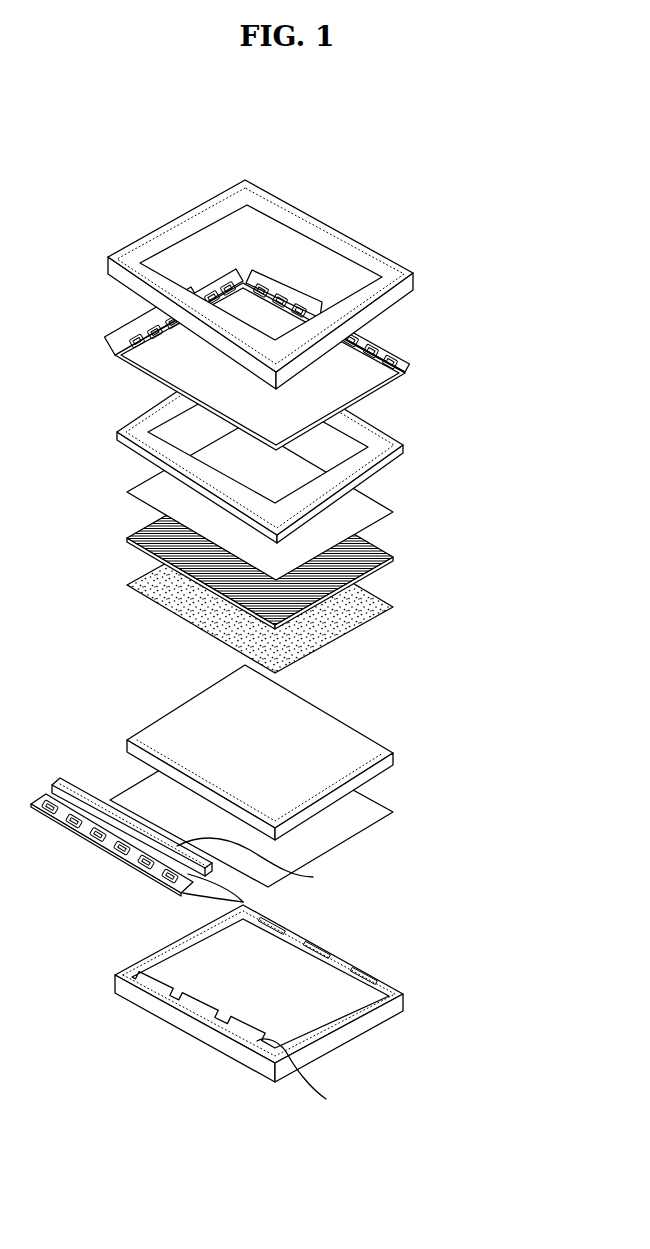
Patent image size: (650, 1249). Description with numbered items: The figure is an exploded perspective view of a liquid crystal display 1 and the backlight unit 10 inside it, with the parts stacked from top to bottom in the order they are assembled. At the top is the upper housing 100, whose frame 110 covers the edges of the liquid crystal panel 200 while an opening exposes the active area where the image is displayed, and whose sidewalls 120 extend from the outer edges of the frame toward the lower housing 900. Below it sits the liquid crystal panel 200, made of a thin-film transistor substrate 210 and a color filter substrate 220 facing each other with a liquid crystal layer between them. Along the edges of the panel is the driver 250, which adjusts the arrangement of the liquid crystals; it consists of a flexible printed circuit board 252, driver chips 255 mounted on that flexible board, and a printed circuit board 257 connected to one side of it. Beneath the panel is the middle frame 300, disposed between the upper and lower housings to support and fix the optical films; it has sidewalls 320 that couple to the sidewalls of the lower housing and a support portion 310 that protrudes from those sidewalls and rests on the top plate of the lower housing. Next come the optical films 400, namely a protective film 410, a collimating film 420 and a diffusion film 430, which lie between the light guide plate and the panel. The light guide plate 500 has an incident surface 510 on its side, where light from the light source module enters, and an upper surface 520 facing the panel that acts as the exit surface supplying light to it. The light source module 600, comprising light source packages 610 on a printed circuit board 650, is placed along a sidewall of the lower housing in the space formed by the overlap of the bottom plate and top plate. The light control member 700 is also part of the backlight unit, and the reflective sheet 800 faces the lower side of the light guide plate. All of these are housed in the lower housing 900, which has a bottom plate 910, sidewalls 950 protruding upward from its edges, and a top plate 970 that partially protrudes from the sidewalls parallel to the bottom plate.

The liquid crystal display 1 is at (346, 168).
The backlight unit 10 is at (438, 1088).
The upper housing 100 is at (310, 284).
The frame 110 is at (400, 268).
The sidewalls 120 is at (416, 287).
The liquid crystal panel 200 is at (303, 366).
The thin-film transistor substrate 210 is at (368, 410).
The color filter substrate 220 is at (375, 392).
The driver 250 is at (308, 327).
The flexible printed circuit board 252 is at (406, 372).
The driver chips 255 is at (475, 350).
The printed circuit board 257 is at (475, 350).
The middle frame 300 is at (314, 445).
The support portion 310 is at (397, 446).
The sidewalls 320 is at (401, 454).
The optical films 400 is at (309, 548).
The protective film 410 is at (385, 503).
The collimating film 420 is at (385, 547).
The diffusion film 430 is at (385, 595).
The light guide plate 500 is at (210, 752).
The incident surface 510 is at (128, 749).
The upper surface 520 is at (140, 735).
The light source module 600 is at (252, 854).
The light source packages 610 is at (190, 873).
The printed circuit board 650 is at (212, 873).
The light control member 700 is at (313, 877).
The reflective sheet 800 is at (385, 803).
The lower housing 900 is at (284, 1008).
The bottom plate 910 is at (335, 1013).
The sidewalls 950 is at (417, 1095).
The top plate 970 is at (417, 1095).